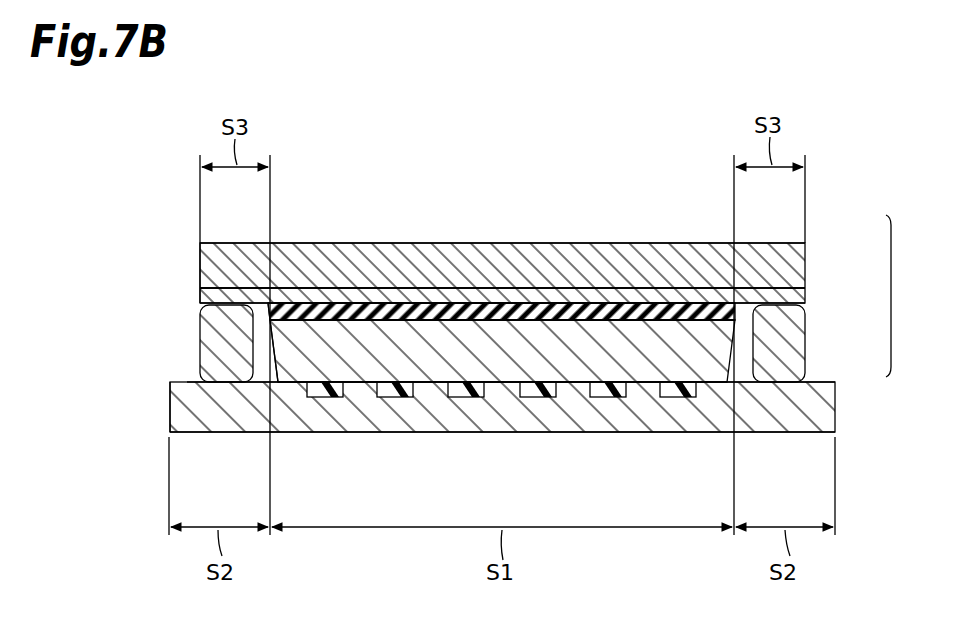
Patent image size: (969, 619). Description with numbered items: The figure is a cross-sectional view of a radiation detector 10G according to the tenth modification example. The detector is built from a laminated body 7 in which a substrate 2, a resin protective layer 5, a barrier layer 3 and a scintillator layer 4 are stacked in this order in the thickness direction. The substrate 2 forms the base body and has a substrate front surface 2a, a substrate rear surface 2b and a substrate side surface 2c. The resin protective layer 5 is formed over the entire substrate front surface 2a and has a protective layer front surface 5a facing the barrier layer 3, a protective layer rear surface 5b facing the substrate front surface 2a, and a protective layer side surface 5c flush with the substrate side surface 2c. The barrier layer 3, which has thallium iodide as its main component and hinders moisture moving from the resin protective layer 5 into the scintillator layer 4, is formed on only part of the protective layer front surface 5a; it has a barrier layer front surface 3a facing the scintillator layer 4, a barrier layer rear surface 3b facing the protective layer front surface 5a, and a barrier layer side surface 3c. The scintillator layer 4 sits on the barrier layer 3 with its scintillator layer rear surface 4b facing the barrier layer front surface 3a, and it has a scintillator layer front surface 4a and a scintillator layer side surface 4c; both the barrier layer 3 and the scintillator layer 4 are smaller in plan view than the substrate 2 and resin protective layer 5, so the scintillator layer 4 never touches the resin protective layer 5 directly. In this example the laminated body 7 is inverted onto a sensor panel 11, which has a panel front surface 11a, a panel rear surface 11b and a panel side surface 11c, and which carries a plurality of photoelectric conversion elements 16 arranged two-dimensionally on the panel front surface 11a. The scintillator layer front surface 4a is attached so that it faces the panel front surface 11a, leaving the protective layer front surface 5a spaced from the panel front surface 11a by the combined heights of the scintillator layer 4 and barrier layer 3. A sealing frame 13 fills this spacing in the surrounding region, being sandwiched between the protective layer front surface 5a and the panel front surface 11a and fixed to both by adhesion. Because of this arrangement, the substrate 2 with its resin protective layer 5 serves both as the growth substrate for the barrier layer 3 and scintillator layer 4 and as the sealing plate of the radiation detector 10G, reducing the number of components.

The radiation detector 10G is at (640, 109).
The substrate 2 is at (809, 255).
The substrate front surface 2a is at (594, 289).
The substrate rear surface 2b is at (648, 243).
The substrate side surface 2c is at (200, 276).
The resin protective layer 5 is at (809, 296).
The protective layer front surface 5a is at (298, 303).
The protective layer rear surface 5b is at (334, 288).
The protective layer side surface 5c is at (200, 300).
The barrier layer 3 is at (739, 313).
The barrier layer front surface 3a is at (425, 319).
The barrier layer rear surface 3b is at (470, 303).
The barrier layer side surface 3c is at (266, 304).
The scintillator layer 4 is at (739, 338).
The scintillator layer front surface 4a is at (378, 384).
The scintillator layer rear surface 4b is at (357, 322).
The scintillator layer side surface 4c is at (271, 332).
The laminated body 7 is at (900, 296).
The sensor panel 11 is at (838, 419).
The panel front surface 11a is at (187, 382).
The panel rear surface 11b is at (693, 432).
The panel side surface 11c is at (170, 390).
The sealing frame 13 is at (200, 337).
The photoelectric conversion element 16 is at (607, 396).